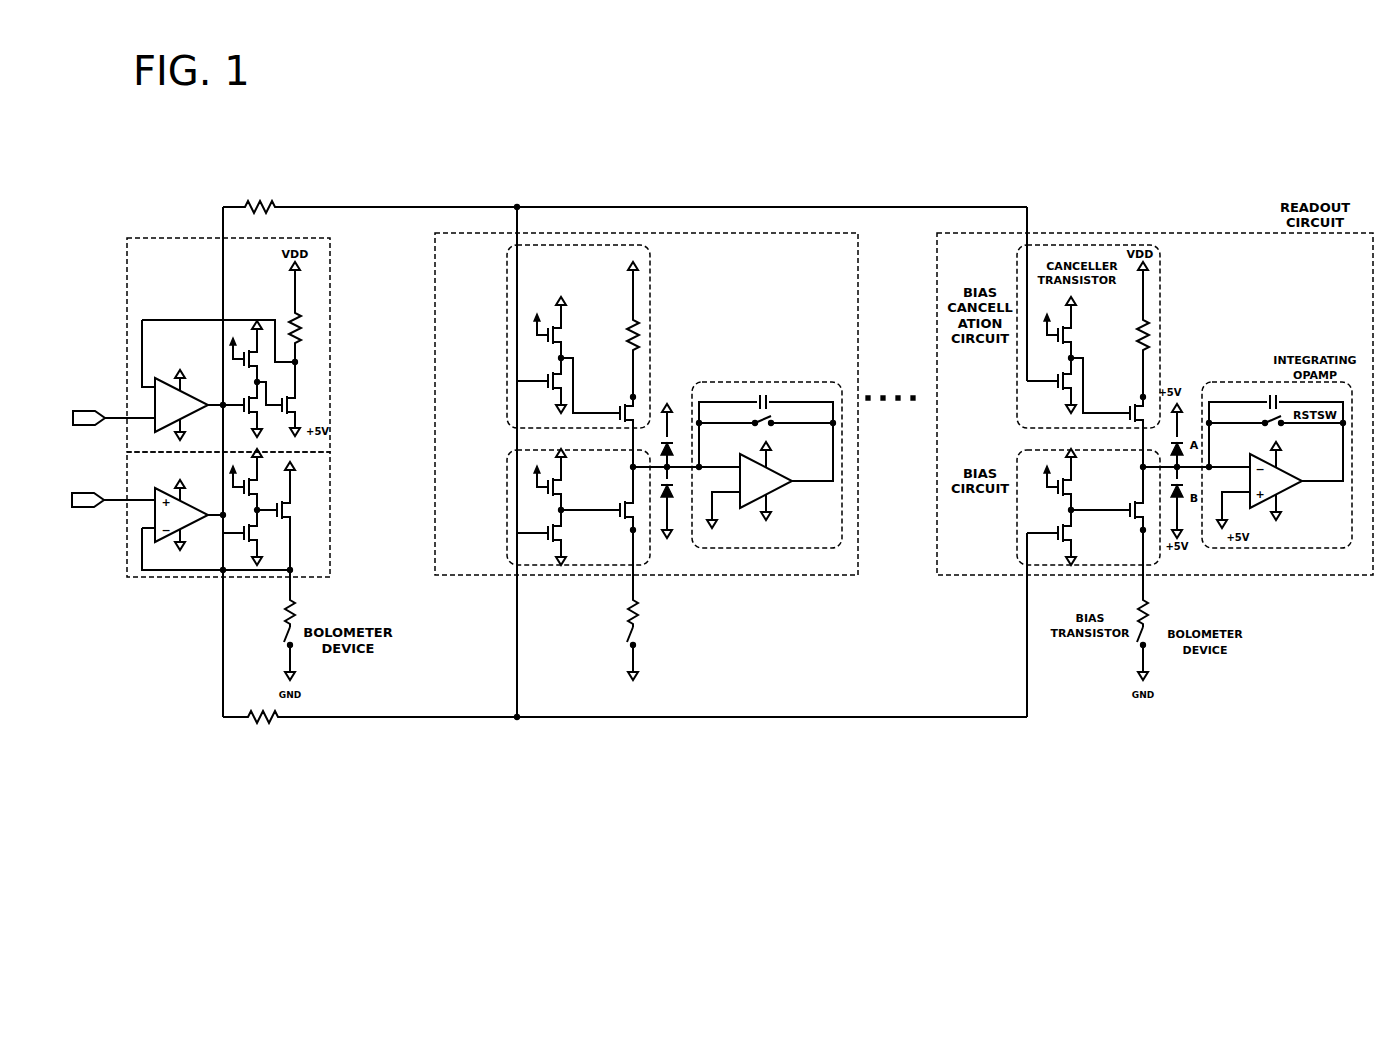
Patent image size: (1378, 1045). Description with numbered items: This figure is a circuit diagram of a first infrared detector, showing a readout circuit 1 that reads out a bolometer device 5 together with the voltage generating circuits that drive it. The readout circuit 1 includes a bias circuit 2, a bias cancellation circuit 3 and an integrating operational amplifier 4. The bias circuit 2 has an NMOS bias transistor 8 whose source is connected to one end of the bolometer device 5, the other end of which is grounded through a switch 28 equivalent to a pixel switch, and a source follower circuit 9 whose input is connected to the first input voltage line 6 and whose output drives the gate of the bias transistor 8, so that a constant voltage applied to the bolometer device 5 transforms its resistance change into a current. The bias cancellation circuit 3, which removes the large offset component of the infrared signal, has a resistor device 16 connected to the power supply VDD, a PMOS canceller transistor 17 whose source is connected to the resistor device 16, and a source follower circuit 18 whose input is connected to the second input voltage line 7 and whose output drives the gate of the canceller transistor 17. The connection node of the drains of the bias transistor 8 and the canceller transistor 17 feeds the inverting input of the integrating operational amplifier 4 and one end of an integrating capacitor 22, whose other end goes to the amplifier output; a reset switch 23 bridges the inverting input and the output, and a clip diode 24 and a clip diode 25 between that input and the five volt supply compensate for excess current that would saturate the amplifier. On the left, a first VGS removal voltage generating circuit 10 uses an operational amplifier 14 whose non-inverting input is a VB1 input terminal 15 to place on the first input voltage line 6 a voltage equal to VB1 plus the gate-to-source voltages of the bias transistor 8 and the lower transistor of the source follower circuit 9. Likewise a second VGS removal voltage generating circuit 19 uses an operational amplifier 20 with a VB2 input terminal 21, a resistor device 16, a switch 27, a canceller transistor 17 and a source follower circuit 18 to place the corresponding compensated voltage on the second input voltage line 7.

The readout circuit 1 is at (748, 222).
The bias circuit 2 is at (553, 567).
The bias cancellation circuit 3 is at (612, 245).
The integrating operational amplifier 4 is at (853, 350).
The bolometer device 5 is at (636, 626).
The first input voltage line 6 is at (470, 717).
The second input voltage line 7 is at (470, 206).
The bias transistor 8 is at (622, 516).
The source follower circuit 9 is at (262, 480).
The first VGS removal voltage generating circuit 10 is at (330, 510).
The operational amplifier 14 is at (141, 530).
The VB1 input terminal 15 is at (81, 513).
The resistor device 16 is at (641, 330).
The canceller transistor 17 is at (623, 397).
The source follower circuit 18 is at (561, 358).
The second VGS removal voltage generating circuit 19 is at (332, 335).
The operational amplifier 20 is at (143, 397).
The VB2 input terminal 21 is at (63, 407).
The integrating capacitor 22 is at (762, 394).
The reset switch 23 is at (753, 420).
The clip diode 24 is at (678, 430).
The clip diode 25 is at (680, 508).
The switch 27 is at (644, 290).
The switch 28 is at (624, 637).